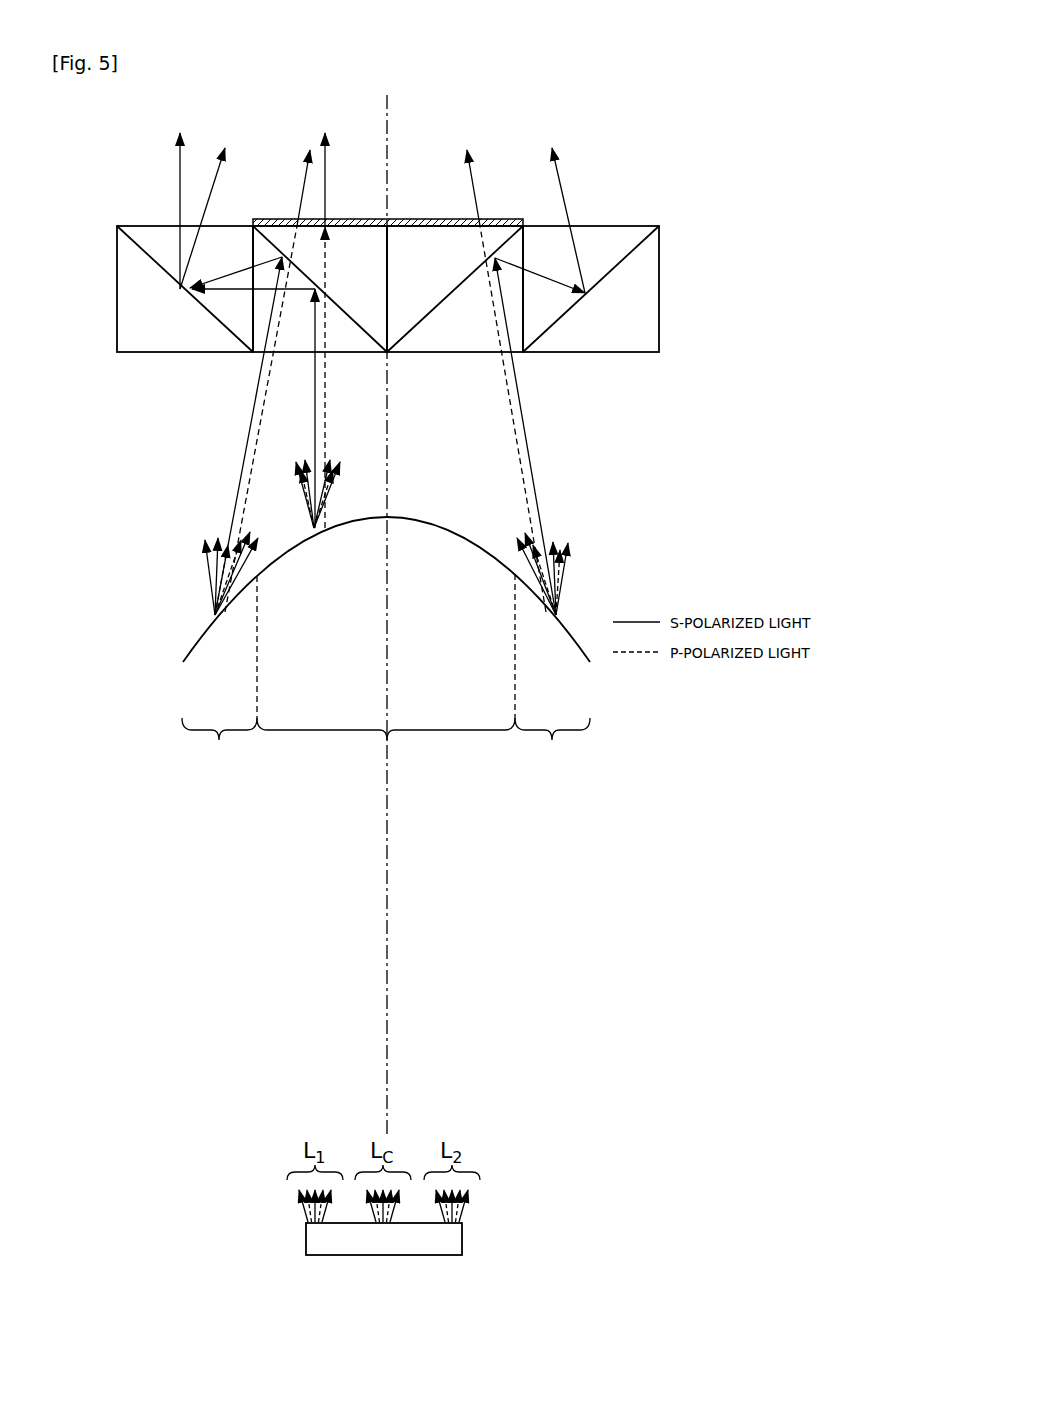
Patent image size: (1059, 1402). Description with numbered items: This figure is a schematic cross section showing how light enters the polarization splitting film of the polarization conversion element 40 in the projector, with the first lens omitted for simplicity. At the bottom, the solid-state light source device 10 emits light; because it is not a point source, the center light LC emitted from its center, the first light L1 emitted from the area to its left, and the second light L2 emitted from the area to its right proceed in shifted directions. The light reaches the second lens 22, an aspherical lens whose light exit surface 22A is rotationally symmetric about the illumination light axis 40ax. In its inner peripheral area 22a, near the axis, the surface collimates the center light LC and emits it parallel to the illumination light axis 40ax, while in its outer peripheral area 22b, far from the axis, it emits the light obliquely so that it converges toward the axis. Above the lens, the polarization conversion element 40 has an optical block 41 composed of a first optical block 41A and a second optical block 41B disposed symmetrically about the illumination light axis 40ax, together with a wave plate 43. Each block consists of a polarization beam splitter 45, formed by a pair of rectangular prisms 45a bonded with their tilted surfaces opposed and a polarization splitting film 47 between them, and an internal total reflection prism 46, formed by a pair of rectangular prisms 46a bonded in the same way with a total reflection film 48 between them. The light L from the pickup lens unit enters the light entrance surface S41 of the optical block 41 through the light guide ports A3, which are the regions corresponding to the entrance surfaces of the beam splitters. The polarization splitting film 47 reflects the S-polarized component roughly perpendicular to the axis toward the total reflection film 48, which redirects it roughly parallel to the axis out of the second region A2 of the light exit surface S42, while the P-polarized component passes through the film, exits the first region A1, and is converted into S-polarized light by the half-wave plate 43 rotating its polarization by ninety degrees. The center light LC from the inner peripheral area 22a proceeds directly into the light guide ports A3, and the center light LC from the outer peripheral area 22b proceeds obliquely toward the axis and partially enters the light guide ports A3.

The solid-state light source device 10 is at (462, 1240).
The second lens 22 is at (168, 600).
The light exit surface 22A is at (200, 637).
The inner peripheral area 22a is at (386, 745).
The outer peripheral area 22b is at (386, 745).
The polarization conversion element 40 is at (652, 178).
The illumination light axis 40ax is at (389, 611).
The optical block 41 is at (588, 375).
The first optical block 41A is at (242, 387).
The second optical block 41B is at (518, 370).
The wave plate 43 is at (493, 223).
The polarization beam splitter 45 is at (352, 343).
The rectangular prism 45a is at (282, 237).
The internal total reflection prism 46 is at (130, 312).
The rectangular prism 46a is at (163, 238).
The polarization splitting film 47 is at (345, 310).
The total reflection film 48 is at (157, 266).
The first region A1 is at (405, 223).
The second region A2 is at (128, 225).
The light guide port A3 is at (483, 347).
The light entrance surface S41 is at (127, 355).
The light exit surface S42 is at (172, 225).
The light L is at (541, 634).
The first light L1 is at (235, 572).
The second light L2 is at (217, 563).
The center light LC is at (317, 428).